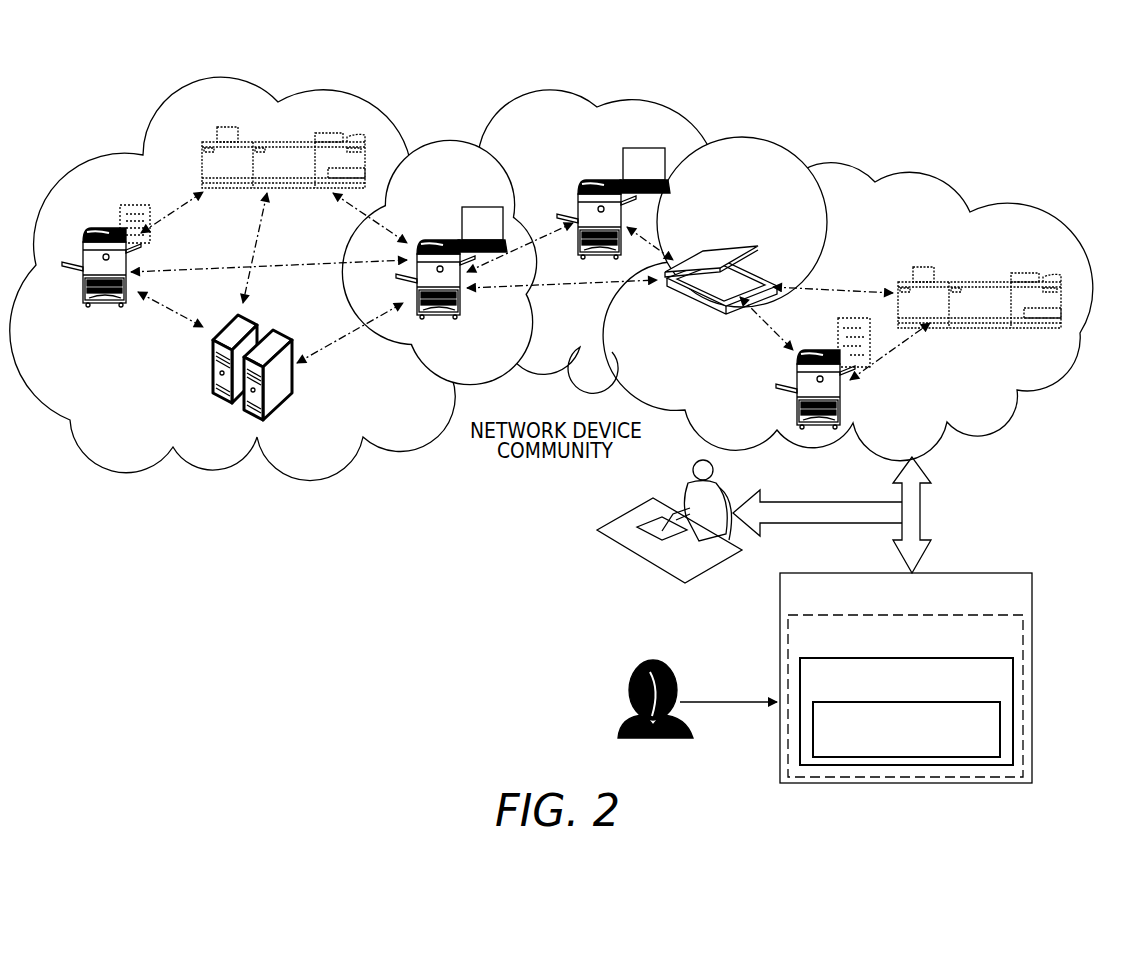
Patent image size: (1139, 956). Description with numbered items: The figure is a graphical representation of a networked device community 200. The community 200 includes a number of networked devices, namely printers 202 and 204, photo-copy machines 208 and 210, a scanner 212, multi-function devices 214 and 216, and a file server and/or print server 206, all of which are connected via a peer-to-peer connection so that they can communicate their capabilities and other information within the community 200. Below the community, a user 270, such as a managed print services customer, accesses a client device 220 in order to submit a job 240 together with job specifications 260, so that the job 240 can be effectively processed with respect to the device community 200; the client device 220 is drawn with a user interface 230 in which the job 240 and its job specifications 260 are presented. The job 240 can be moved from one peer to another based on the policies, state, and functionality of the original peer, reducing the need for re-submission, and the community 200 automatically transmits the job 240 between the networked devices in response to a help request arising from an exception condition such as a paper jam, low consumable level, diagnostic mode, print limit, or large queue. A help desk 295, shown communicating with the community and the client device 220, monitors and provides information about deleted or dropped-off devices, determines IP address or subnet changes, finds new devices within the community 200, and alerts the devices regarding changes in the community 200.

The networked device community 200 is at (897, 150).
The printer 202 is at (98, 303).
The printer 204 is at (327, 130).
The file server and/or print server 206 is at (293, 397).
The photo-copy machine 208 is at (437, 237).
The photo-copy machine 210 is at (597, 180).
The scanner 212 is at (760, 255).
The multi-function device 214 is at (978, 283).
The multi-function device 216 is at (798, 403).
The client device 220 is at (930, 653).
The user interface 230 is at (934, 681).
The job 240 is at (940, 711).
The job specifications 260 is at (1000, 733).
The user 270 is at (643, 670).
The help desk 295 is at (692, 478).